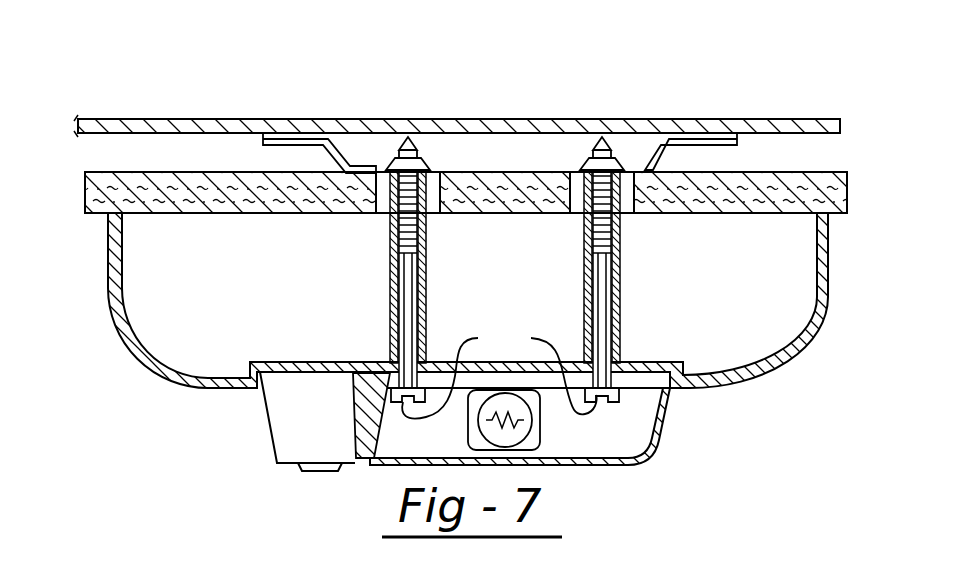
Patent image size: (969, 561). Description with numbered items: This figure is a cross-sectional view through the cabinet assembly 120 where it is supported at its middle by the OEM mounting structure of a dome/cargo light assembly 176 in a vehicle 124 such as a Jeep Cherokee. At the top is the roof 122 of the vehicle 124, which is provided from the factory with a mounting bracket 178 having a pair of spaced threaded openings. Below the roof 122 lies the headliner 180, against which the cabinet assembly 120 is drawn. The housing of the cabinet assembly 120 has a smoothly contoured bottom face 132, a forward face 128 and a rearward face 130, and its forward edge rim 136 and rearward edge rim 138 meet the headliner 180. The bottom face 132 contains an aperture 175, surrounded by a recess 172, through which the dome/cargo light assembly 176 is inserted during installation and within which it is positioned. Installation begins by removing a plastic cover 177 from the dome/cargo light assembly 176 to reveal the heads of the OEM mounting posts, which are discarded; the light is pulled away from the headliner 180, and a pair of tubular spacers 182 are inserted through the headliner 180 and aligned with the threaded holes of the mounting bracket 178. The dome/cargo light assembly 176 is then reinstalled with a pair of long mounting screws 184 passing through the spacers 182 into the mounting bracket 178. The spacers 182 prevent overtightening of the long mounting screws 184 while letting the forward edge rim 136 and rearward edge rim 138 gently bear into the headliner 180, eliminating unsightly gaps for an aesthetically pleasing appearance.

The cabinet assembly 120 is at (780, 395).
The roof 122 is at (218, 119).
The vehicle 124 is at (767, 121).
The forward face 128 is at (830, 240).
The rearward face 130 is at (108, 278).
The bottom face 132 is at (235, 388).
The forward edge rim 136 is at (832, 172).
The rearward edge rim 138 is at (127, 172).
The recess 172 is at (276, 378).
The aperture 175 is at (640, 364).
The dome/cargo light assembly 176 is at (276, 466).
The plastic cover 177 is at (655, 448).
The mounting bracket 178 is at (668, 150).
The headliner 180 is at (240, 213).
The tubular spacers 182 is at (427, 286).
The long mounting screws 184 is at (499, 373).